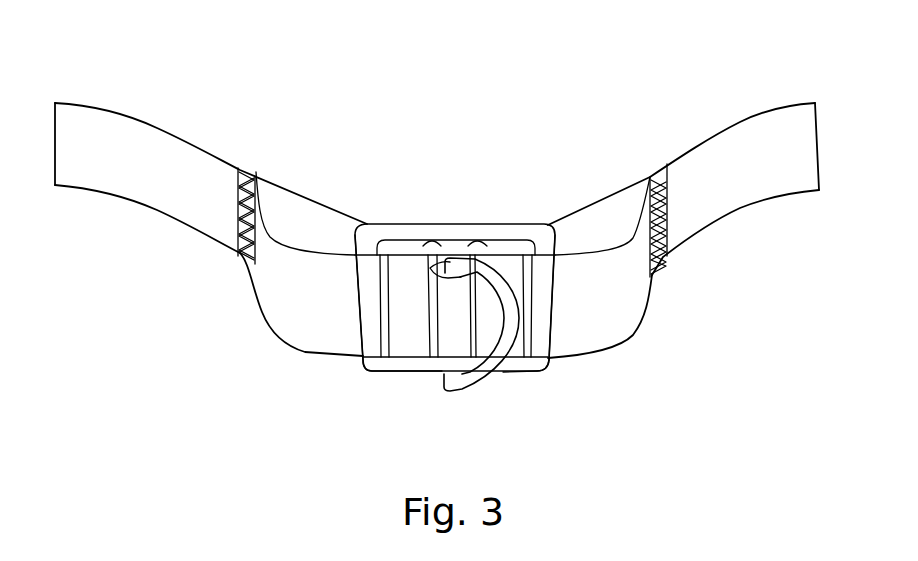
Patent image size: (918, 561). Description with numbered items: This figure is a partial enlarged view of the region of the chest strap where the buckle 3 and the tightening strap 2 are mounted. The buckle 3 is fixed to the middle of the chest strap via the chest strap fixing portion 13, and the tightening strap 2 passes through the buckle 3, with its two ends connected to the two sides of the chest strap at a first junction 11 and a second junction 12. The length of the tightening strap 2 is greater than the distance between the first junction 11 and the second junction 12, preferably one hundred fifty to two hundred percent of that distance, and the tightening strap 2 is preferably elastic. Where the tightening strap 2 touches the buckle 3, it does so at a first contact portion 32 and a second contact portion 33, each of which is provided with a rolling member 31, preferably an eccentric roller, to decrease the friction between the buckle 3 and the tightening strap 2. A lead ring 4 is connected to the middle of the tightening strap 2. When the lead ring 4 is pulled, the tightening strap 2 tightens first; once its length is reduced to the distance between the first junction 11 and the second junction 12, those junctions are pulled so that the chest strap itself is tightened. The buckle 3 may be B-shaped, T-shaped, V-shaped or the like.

The tightening strap 2 is at (617, 308).
The buckle 3 is at (465, 285).
The lead ring 4 is at (500, 370).
The first junction 11 is at (253, 178).
The second junction 12 is at (658, 170).
The chest strap fixing portion 13 is at (458, 250).
The rolling member 31 is at (547, 308).
The first contact portion 32 is at (363, 356).
The second contact portion 33 is at (545, 358).